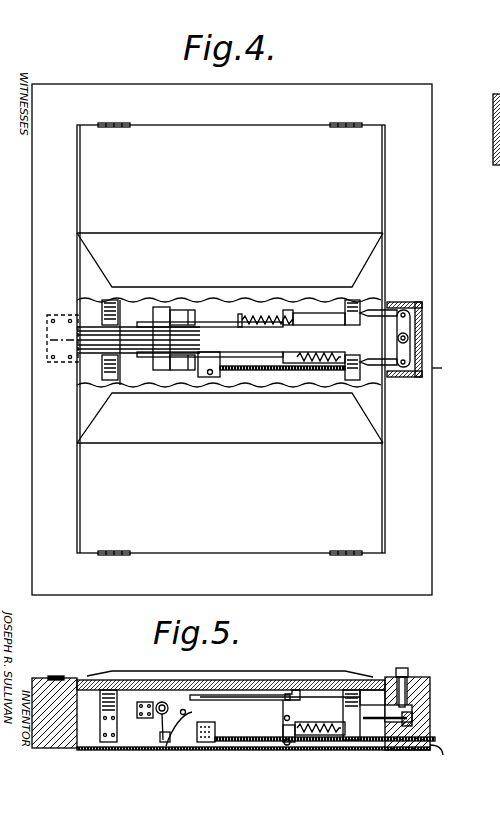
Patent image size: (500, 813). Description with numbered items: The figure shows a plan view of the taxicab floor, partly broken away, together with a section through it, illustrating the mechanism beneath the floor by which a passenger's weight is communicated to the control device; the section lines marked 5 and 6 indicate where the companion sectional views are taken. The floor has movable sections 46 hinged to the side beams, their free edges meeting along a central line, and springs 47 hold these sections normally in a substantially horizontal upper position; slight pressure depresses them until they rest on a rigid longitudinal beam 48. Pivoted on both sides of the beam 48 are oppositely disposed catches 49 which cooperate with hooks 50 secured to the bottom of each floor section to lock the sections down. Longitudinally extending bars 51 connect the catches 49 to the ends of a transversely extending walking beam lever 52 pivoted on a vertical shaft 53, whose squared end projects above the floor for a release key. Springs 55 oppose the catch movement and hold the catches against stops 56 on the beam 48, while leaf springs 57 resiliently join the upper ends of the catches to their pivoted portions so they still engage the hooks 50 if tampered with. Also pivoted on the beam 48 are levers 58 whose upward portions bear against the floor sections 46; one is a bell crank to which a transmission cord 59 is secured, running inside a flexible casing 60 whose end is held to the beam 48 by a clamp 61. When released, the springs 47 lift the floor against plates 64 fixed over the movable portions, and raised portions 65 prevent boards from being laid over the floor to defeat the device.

In FIG. 4, the box 5 is at (50, 340).
In FIG. 4, the section line 6— 6 is at (127, 625).
In FIG. 4, the movable floor sections 46 is at (82, 207).
In FIG. 5, the movable floor sections 46 is at (145, 683).
In FIG. 4, the springs 47 is at (113, 305).
In FIG. 5, the springs 47 is at (105, 728).
In FIG. 4, the rigid longitudinal beam 48 is at (262, 345).
In FIG. 5, the rigid longitudinal beam 48 is at (143, 746).
In FIG. 5, the catches 49 is at (288, 745).
In FIG. 5, the hooks 50 is at (295, 688).
In FIG. 4, the longitudinally extending bars 51 is at (390, 311).
In FIG. 5, the longitudinally extending bars 51 is at (332, 692).
In FIG. 4, the walking beam lever 52 is at (412, 321).
In FIG. 5, the walking beam lever 52 is at (410, 712).
In FIG. 5, the shaft 53 is at (406, 692).
In FIG. 4, the springs 55 is at (250, 318).
In FIG. 5, the springs 55 is at (318, 734).
In FIG. 5, the stops 56 is at (298, 740).
In FIG. 5, the leaf springs 57 is at (282, 712).
In FIG. 4, the levers 58 is at (178, 313).
In FIG. 5, the levers 58 is at (163, 720).
In FIG. 5, the transmission cord 59 is at (185, 742).
In FIG. 5, the flexible casing 60 is at (258, 742).
In FIG. 5, the clamp 61 is at (208, 730).
In FIG. 4, the plates 64 is at (53, 315).
In FIG. 5, the plates 64 is at (65, 675).
In FIG. 4, the raised portions 65 is at (231, 240).
In FIG. 5, the raised portions 65 is at (250, 680).